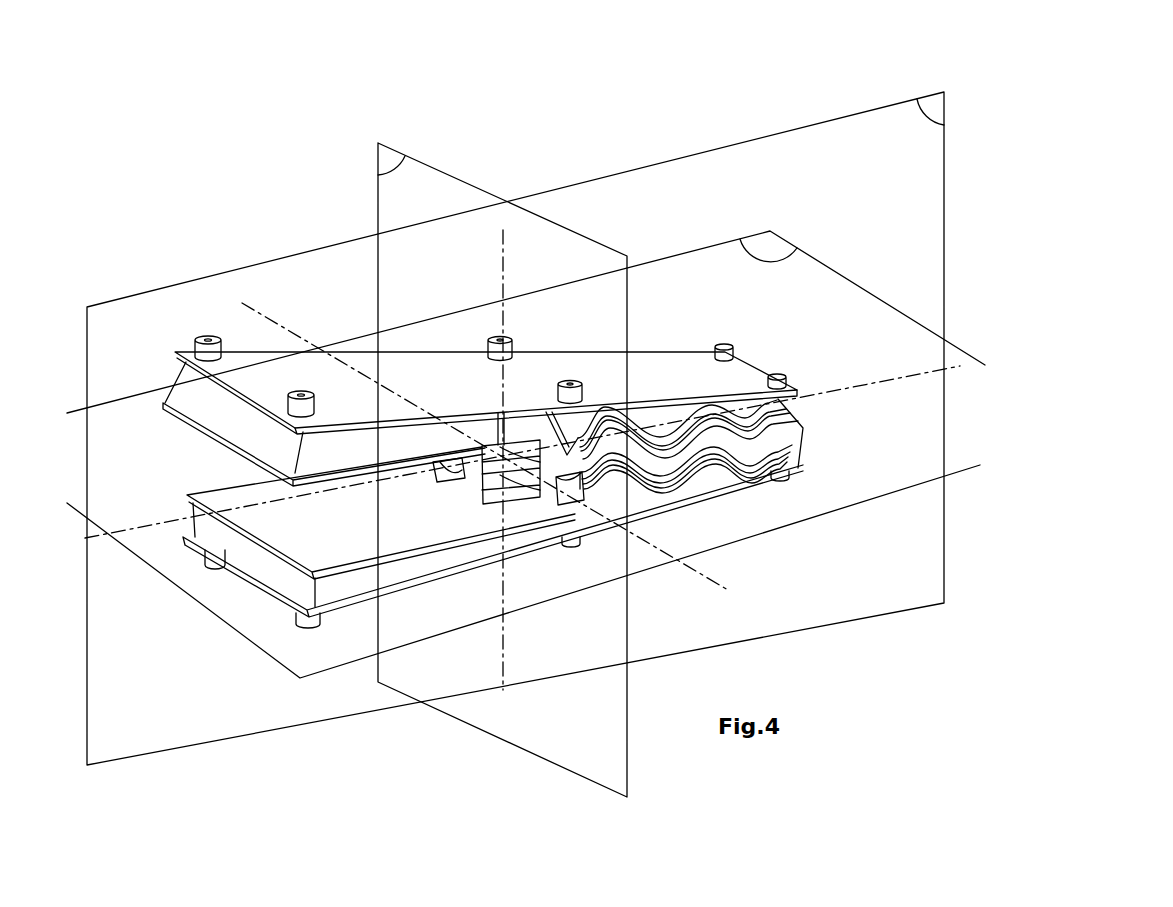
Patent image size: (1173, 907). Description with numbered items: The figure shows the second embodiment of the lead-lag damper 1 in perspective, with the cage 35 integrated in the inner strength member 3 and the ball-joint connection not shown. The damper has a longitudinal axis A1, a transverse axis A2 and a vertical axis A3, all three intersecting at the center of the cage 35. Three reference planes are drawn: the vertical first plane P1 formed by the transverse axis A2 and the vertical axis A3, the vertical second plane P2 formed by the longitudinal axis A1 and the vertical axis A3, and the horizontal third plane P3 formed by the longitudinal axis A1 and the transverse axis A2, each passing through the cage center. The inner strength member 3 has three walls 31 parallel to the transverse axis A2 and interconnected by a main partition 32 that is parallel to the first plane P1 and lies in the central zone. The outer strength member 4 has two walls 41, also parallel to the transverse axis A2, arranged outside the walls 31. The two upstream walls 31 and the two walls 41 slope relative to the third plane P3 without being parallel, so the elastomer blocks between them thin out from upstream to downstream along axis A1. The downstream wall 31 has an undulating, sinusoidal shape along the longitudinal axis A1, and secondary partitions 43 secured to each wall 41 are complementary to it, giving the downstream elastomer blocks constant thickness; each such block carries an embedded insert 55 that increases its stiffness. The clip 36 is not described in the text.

The lead-lag damper 1 is at (165, 642).
The inner strength member 3 is at (150, 488).
The outer strength member 4 is at (266, 290).
The wall 31 is at (233, 464).
The main partition 32 is at (573, 492).
The cage 35 is at (440, 475).
The clip 36 is at (512, 440).
The wall 41 is at (430, 368).
The secondary partition 43 is at (558, 430).
The insert 55 is at (662, 422).
The vertical first plane P1 is at (383, 161).
The vertical second plane P2 is at (932, 101).
The horizontal third plane P3 is at (778, 240).
The longitudinal axis A1 is at (897, 378).
The transverse axis A2 is at (717, 586).
The vertical axis A3 is at (503, 230).